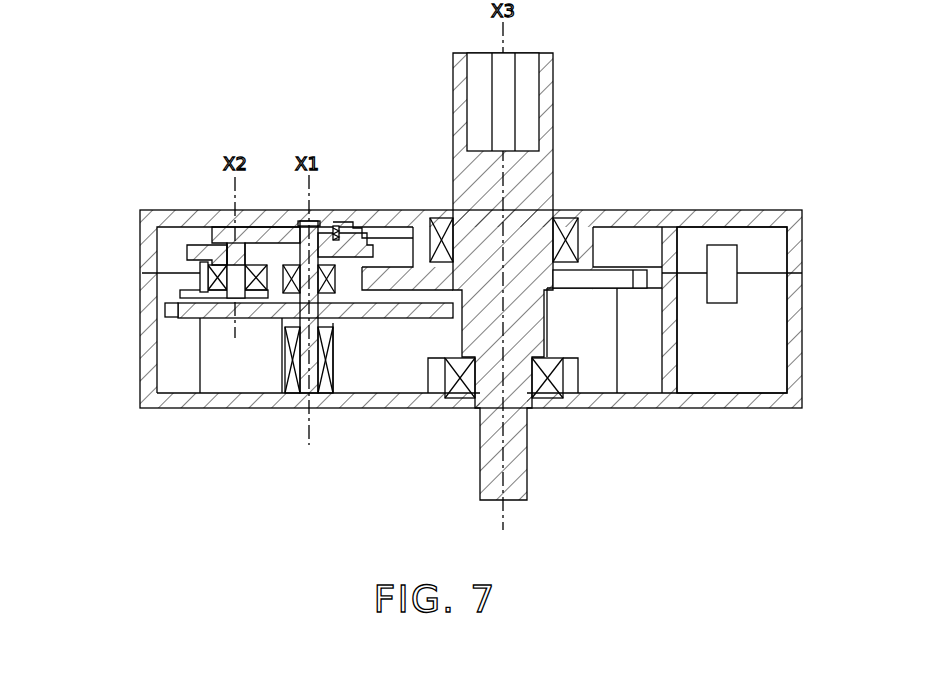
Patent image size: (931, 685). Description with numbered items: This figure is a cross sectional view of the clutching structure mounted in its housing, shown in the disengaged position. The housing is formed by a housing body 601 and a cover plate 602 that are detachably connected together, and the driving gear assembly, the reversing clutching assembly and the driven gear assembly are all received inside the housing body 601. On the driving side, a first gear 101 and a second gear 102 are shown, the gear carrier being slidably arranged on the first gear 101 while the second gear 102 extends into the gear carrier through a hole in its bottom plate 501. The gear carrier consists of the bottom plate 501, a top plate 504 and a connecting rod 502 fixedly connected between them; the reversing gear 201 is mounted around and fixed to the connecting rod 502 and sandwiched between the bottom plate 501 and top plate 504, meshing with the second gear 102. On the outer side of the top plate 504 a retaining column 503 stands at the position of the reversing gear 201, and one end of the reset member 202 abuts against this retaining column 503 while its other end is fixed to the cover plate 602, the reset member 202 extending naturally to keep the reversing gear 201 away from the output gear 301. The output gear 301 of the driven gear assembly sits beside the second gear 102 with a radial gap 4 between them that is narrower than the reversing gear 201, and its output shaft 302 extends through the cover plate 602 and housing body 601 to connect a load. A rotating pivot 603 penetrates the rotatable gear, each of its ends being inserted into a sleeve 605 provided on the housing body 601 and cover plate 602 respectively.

The radial gap 4 is at (363, 285).
The first gear 101 is at (165, 312).
The second gear 102 is at (280, 308).
The reversing gear 201 is at (197, 272).
The reset member 202 is at (340, 232).
The output gear 301 is at (617, 277).
The output shaft 302 is at (535, 172).
The bottom plate 501 is at (175, 296).
The connecting rod 502 is at (228, 288).
The retaining column 503 is at (212, 228).
The top plate 504 is at (193, 250).
The housing body 601 is at (698, 405).
The cover plate 602 is at (727, 215).
The rotating pivot 603 is at (303, 363).
The sleeve 605 is at (330, 250).